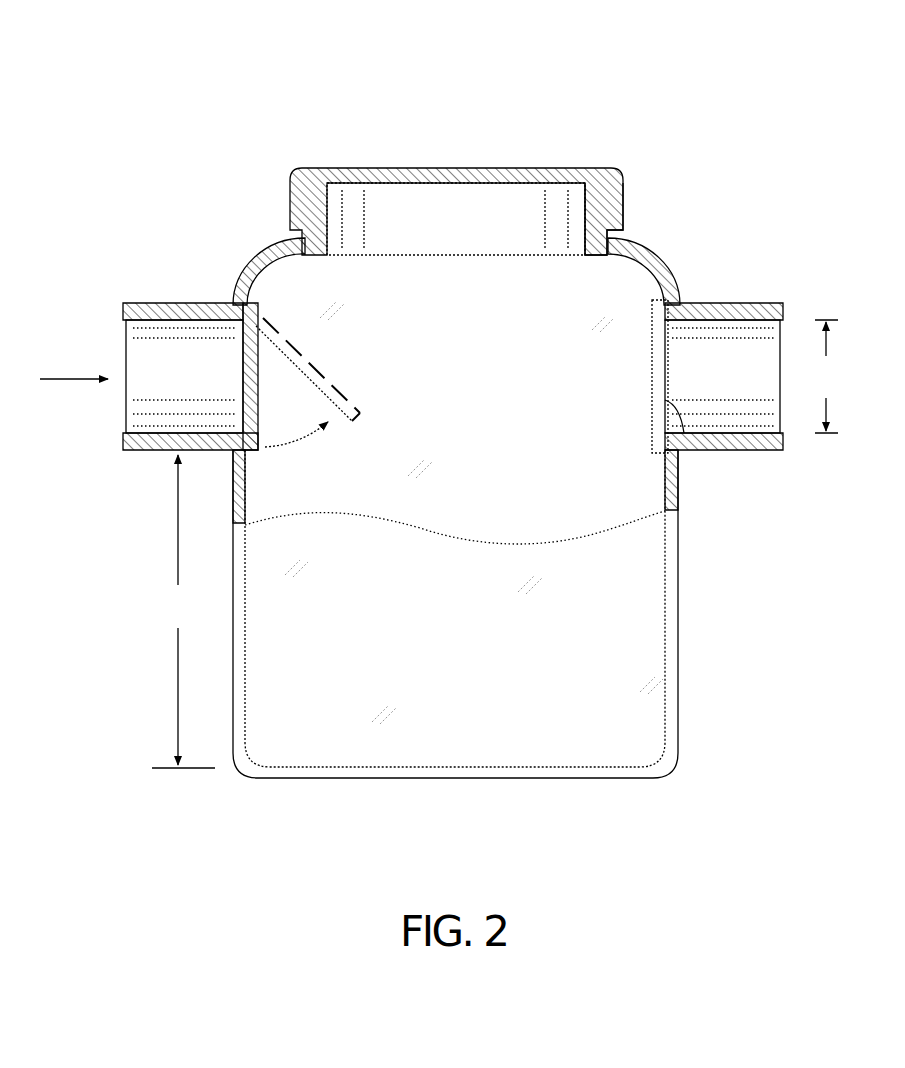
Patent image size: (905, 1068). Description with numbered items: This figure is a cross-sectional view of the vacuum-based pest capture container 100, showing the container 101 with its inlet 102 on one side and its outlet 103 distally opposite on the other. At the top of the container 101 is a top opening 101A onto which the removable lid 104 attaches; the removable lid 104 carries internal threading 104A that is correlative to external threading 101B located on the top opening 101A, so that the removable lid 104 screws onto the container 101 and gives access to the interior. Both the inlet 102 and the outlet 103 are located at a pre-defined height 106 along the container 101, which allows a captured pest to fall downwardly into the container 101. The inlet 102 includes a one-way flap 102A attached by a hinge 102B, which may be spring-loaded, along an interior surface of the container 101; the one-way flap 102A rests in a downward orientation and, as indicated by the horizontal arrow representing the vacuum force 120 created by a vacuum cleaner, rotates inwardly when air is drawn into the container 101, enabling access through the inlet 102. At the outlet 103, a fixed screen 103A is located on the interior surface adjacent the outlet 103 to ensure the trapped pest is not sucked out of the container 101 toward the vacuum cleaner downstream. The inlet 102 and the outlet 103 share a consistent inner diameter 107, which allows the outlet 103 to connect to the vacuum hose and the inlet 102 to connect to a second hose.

The vacuum-based pest capture container 100 is at (150, 100).
The container 101 is at (263, 252).
The top opening 101A is at (477, 215).
The external threading 101B is at (625, 208).
The removable lid 104 is at (366, 168).
The internal threading 104A is at (707, 217).
The inlet 102 is at (232, 293).
The one-way flap 102A is at (257, 452).
The hinge 102B is at (250, 305).
The outlet 103 is at (783, 293).
The fixed screen 103A is at (682, 478).
The height 106 is at (181, 611).
The inner diameter 107 is at (826, 376).
The vacuum force 120 is at (68, 378).